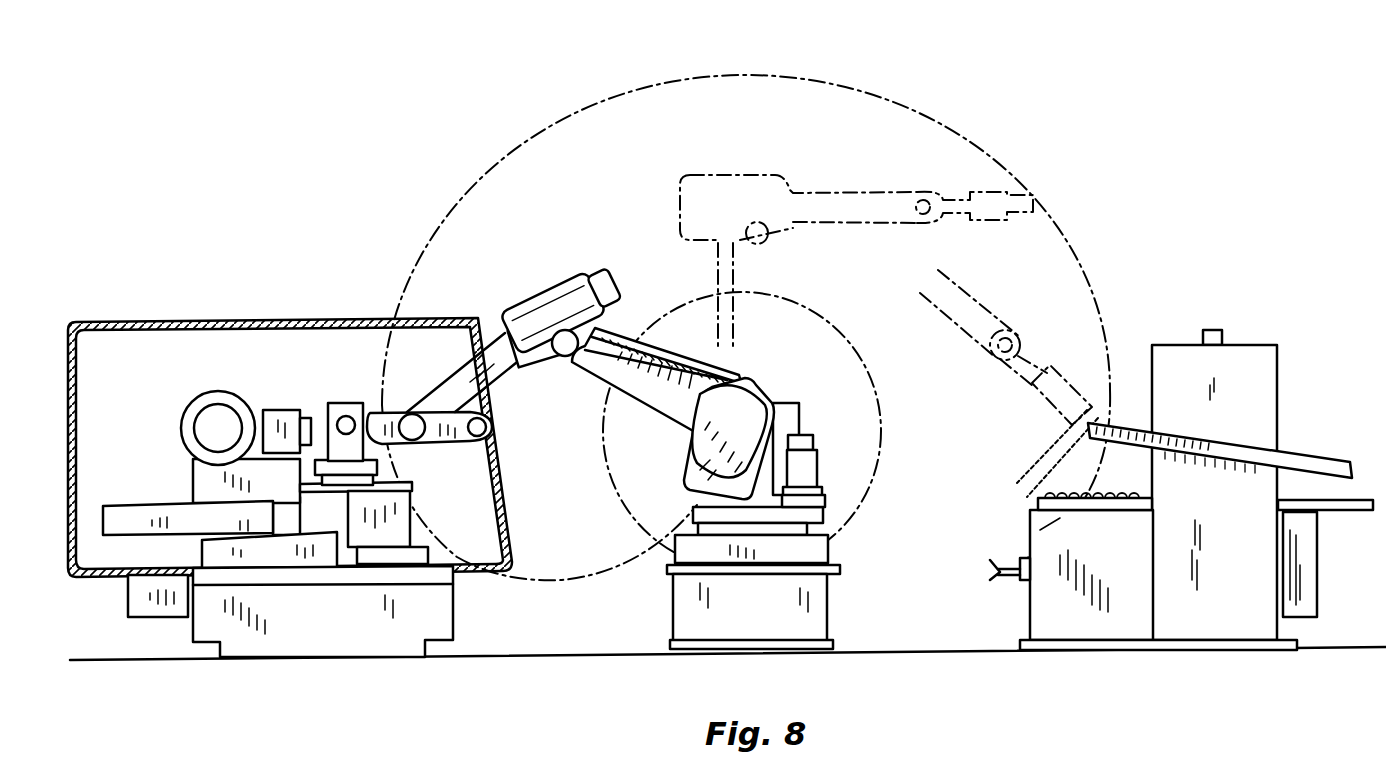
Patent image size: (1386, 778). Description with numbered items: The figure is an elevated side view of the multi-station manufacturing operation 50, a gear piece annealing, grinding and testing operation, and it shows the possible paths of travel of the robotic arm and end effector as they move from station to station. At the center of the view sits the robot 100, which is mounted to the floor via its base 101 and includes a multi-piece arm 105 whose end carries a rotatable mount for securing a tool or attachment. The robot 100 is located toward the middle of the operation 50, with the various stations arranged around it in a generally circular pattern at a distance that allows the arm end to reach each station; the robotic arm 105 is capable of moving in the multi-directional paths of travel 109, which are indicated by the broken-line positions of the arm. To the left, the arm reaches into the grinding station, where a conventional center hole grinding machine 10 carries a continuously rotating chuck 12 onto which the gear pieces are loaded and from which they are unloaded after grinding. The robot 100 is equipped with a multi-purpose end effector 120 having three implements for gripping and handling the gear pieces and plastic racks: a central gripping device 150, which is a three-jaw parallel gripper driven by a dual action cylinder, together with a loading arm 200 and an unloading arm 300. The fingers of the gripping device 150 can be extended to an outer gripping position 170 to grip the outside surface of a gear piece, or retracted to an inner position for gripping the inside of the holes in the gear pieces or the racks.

The multi-station manufacturing operation 50 is at (1019, 102).
The center hole grinding machine 10 is at (360, 620).
The chuck 12 is at (322, 420).
The robot 100 is at (833, 516).
The base 101 is at (778, 617).
The multi-piece arm 105 is at (582, 268).
The paths of travel 109 is at (575, 120).
The multi-purpose end effector 120 is at (449, 450).
The gripping device 150 is at (408, 412).
The outer gripping position 170 is at (1066, 434).
The loading arm 200 is at (348, 416).
The unloading arm 300 is at (488, 428).